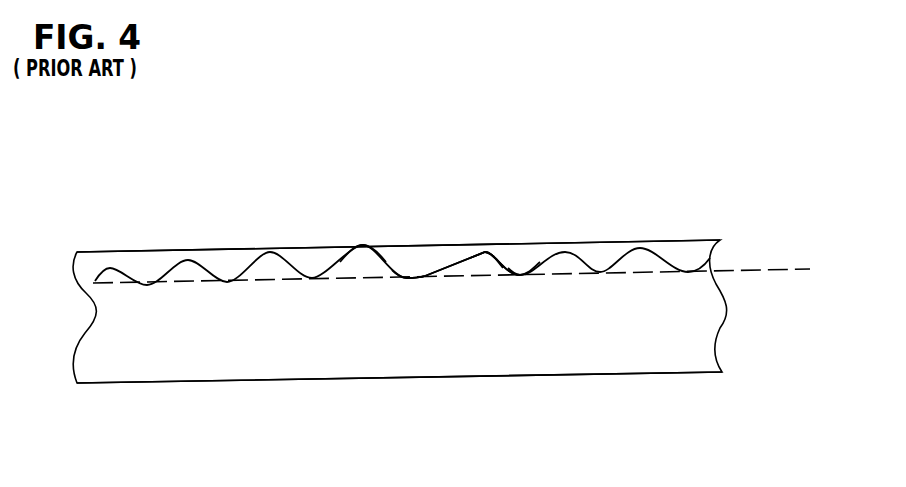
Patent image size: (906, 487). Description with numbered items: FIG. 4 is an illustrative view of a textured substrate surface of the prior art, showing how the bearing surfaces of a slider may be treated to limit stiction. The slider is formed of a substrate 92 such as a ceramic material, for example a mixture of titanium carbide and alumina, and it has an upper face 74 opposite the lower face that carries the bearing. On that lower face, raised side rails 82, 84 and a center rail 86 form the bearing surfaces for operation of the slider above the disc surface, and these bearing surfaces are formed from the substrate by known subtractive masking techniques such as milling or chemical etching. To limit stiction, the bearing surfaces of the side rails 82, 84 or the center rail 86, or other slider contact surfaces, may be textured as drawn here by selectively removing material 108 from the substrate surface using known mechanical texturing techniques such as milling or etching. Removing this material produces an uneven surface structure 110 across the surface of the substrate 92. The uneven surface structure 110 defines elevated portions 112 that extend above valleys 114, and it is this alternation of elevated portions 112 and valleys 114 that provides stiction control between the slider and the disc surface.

The upper face 74 is at (587, 375).
The raised side rail 82 is at (528, 243).
The raised side rail 84 is at (446, 265).
The center rail 86 is at (502, 263).
The substrate 92 is at (730, 322).
The removed material 108 is at (600, 252).
The uneven surface structure 110 is at (403, 274).
The elevated portions 112 is at (364, 243).
The valleys 114 is at (413, 283).